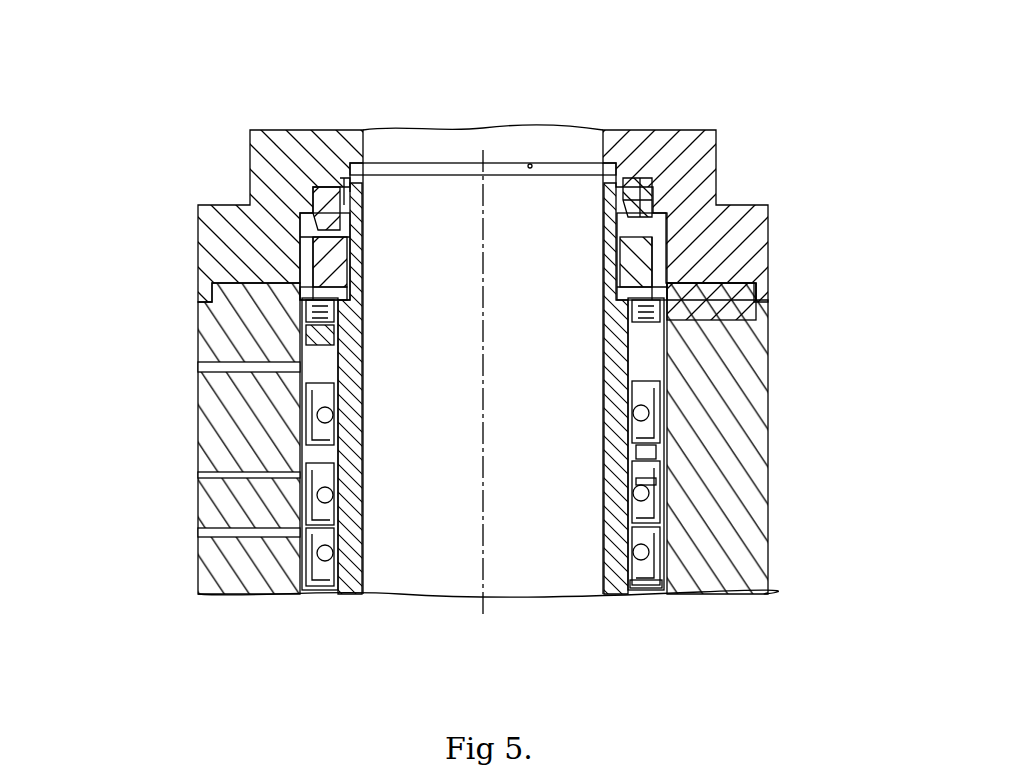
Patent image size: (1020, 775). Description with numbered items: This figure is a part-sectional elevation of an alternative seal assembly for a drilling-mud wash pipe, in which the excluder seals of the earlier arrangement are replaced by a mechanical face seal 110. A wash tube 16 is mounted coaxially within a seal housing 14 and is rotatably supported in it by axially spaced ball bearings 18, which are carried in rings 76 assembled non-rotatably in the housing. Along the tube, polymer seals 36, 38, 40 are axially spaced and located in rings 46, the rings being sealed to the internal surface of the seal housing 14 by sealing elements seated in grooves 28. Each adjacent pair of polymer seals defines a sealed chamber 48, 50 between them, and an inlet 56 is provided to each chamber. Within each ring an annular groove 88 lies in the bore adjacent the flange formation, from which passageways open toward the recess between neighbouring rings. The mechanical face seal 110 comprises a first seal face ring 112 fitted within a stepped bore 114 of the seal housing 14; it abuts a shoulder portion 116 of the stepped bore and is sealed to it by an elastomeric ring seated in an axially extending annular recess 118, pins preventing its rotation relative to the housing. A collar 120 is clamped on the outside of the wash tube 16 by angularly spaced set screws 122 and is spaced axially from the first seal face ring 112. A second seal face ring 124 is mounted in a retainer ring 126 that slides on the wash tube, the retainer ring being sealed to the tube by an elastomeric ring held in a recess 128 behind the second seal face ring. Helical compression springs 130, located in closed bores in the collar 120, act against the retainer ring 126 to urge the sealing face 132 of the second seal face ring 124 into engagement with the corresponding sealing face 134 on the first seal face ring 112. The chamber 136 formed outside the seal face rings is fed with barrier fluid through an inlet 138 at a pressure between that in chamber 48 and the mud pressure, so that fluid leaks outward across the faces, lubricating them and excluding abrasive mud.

The seal housing 14 is at (256, 132).
The wash tube 16 is at (605, 520).
The ball bearings 18 is at (303, 448).
The grooves 28 is at (672, 402).
The polymer seal 36 is at (303, 397).
The polymer seal 38 is at (303, 517).
The polymer seal 40 is at (318, 563).
The rings 46 is at (660, 420).
The sealed chamber 48 is at (660, 483).
The sealed chamber 50 is at (672, 525).
The inlet 56 is at (200, 472).
The rings 76 is at (660, 457).
The annular groove 88 is at (655, 392).
The mechanical face seal 110 is at (650, 232).
The first seal face ring 112 is at (643, 188).
The stepped bore 114 is at (652, 200).
The shoulder portion 116 is at (333, 180).
The annular recess 118 is at (338, 182).
The collar 120 is at (660, 320).
The set screws 122 is at (300, 333).
The second seal face ring 124 is at (323, 260).
The retainer ring 126 is at (320, 293).
The recess 128 is at (690, 290).
The helical compression springs 130 is at (752, 280).
The sealing face 132 is at (302, 225).
The sealing face 134 is at (654, 253).
The chamber 136 is at (312, 237).
The inlet 138 is at (202, 365).